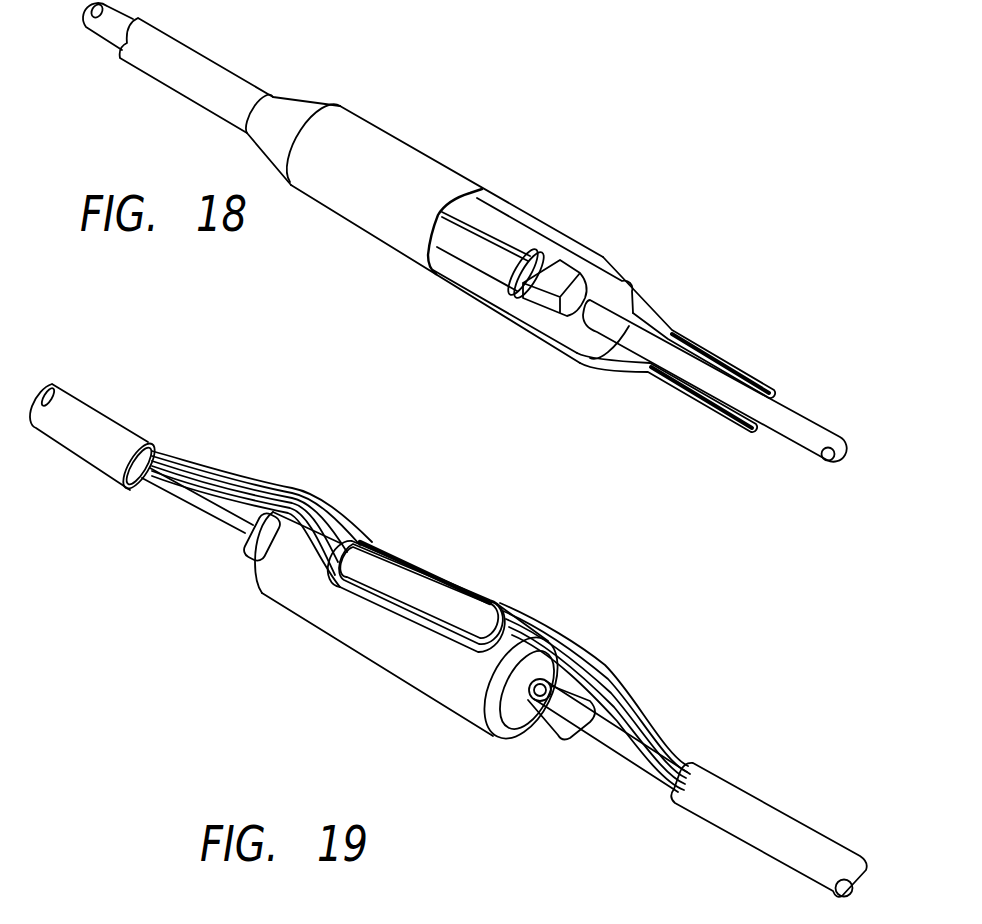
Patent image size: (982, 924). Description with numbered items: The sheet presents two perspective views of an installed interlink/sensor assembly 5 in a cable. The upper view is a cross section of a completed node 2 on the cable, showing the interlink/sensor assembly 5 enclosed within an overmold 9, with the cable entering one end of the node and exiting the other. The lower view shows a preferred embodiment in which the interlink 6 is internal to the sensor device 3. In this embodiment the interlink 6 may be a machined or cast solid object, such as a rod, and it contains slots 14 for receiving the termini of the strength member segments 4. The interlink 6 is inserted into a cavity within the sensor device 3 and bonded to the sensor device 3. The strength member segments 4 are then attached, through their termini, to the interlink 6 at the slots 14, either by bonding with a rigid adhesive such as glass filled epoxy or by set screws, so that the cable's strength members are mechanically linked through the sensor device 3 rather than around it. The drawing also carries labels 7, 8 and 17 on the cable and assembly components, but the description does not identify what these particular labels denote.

In FIG. 18, the node 2 is at (404, 288).
In FIG. 18, the interlink/sensor assembly 5 is at (418, 170).
In FIG. 18, the ferrule 17 is at (575, 277).
In FIG. 18, the overmold 9 is at (662, 287).
In FIG. 18, the cable 8 is at (767, 443).
In FIG. 19, the cable 8 is at (118, 412).
In FIG. 19, the sensor device 3 is at (423, 684).
In FIG. 19, the optical fibers 7 is at (312, 595).
In FIG. 19, the interlink 6 is at (508, 700).
In FIG. 19, the slots 14 is at (540, 697).
In FIG. 19, the strength member segments 4 is at (623, 763).